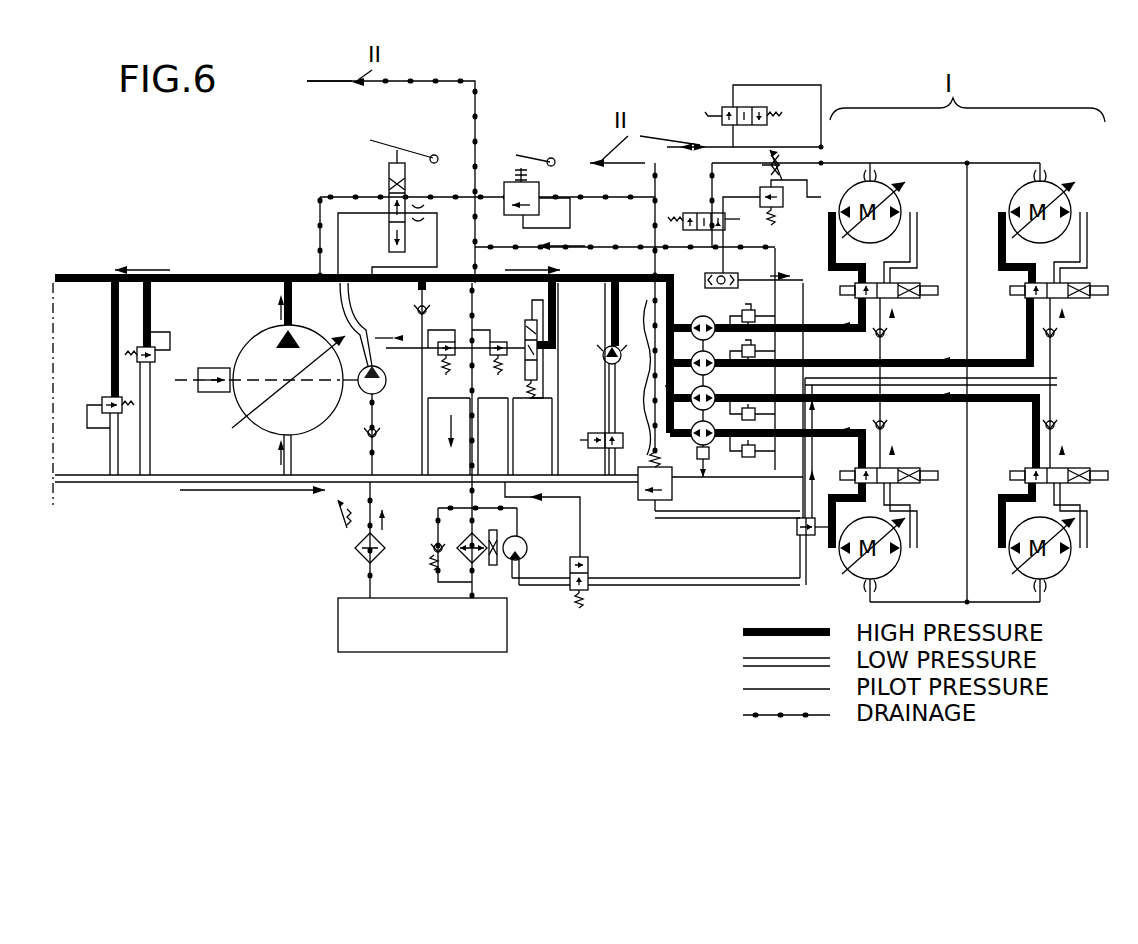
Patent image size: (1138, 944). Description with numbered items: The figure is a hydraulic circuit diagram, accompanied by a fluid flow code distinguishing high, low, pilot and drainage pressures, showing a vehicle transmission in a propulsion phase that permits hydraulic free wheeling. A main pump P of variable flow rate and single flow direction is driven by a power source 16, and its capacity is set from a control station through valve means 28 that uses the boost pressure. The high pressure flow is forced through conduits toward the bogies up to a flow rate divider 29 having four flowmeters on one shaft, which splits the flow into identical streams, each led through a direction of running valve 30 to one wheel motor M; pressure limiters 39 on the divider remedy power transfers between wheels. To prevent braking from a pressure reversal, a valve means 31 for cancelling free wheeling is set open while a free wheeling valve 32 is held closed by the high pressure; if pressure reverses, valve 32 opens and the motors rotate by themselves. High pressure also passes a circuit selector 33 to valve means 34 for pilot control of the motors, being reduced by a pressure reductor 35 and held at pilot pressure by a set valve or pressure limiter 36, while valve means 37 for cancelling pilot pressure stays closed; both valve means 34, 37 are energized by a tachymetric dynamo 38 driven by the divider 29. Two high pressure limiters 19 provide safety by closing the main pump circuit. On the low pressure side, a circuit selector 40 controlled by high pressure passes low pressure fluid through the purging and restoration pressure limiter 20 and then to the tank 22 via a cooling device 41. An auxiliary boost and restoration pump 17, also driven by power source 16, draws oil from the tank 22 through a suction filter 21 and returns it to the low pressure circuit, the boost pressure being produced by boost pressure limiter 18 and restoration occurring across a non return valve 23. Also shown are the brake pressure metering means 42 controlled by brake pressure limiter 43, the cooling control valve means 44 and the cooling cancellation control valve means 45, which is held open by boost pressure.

The power source 16 is at (213, 368).
The auxiliary fixed flow rate boost and restoration pump 17 is at (376, 396).
The boost pressure limiter 18 is at (448, 342).
The high pressure limiter 19 is at (158, 345).
The purging and restoration pressure limiter 20 is at (494, 342).
The suction filter 21 is at (357, 553).
The tank 22 is at (338, 630).
The non return valve 23 is at (410, 432).
The valve means 28 is at (382, 178).
The flow rate divider 29 is at (635, 377).
The direction of running valve 30 is at (900, 300).
The valve means for cancelling free wheeling 31 is at (600, 433).
The free wheeling valve 32 is at (605, 352).
The circuit selector 33 is at (738, 278).
The valve means for pilot control of the hydraulic motors 34 is at (698, 213).
The pressure reductor 35 is at (784, 210).
The set valve or pressure limiter 36 is at (790, 160).
The valve means for cancelling the pilot pressure 37 is at (718, 107).
The electric current generator or tachymetric dynamo 38 is at (697, 453).
The pressure limiters 39 is at (742, 312).
The circuit selector 40 is at (525, 368).
The cooling device 41 is at (493, 520).
The brake pressure metering means 42 is at (640, 500).
The brake pressure limiter 43 is at (540, 188).
The cooling control valve means 44 is at (797, 530).
The cooling cancellation control valve means 45 is at (590, 575).